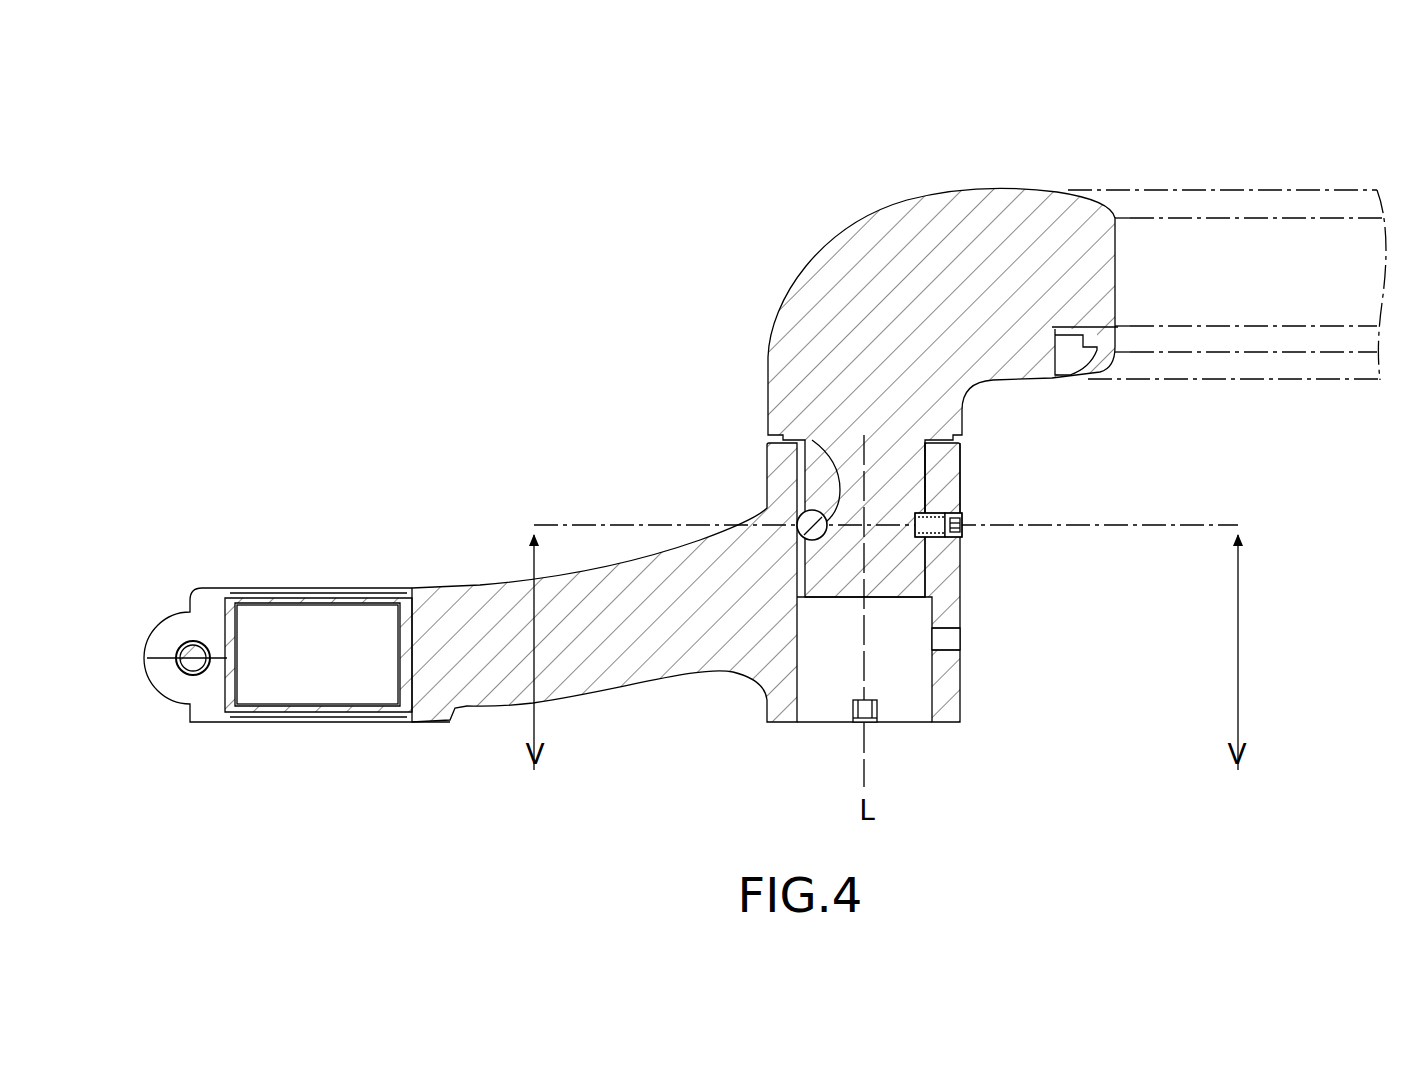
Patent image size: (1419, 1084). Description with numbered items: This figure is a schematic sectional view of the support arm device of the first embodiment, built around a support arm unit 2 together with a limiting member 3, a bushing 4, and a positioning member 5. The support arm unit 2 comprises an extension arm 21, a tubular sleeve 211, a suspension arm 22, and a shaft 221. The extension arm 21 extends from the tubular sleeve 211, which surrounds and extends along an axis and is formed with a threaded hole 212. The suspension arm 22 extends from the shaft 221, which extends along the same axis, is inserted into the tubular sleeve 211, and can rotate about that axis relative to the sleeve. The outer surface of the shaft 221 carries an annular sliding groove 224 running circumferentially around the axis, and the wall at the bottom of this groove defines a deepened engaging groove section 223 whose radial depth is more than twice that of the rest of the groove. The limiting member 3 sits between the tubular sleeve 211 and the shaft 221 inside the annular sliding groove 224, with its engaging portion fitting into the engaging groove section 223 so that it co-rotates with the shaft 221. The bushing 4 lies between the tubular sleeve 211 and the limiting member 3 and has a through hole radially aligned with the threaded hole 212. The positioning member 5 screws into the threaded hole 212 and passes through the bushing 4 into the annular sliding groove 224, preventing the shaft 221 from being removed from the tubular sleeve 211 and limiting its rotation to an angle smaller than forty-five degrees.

The support arm unit 2 is at (863, 203).
The extension arm 21 is at (483, 585).
The suspension arm 22 is at (1010, 190).
The tubular sleeve 211 is at (948, 680).
The threaded hole 212 is at (940, 533).
The shaft 221 is at (850, 600).
The engaging groove section 223 is at (833, 460).
The annular sliding groove 224 is at (918, 512).
The limiting member 3 is at (808, 538).
The bushing 4 is at (935, 464).
The positioning member 5 is at (964, 522).